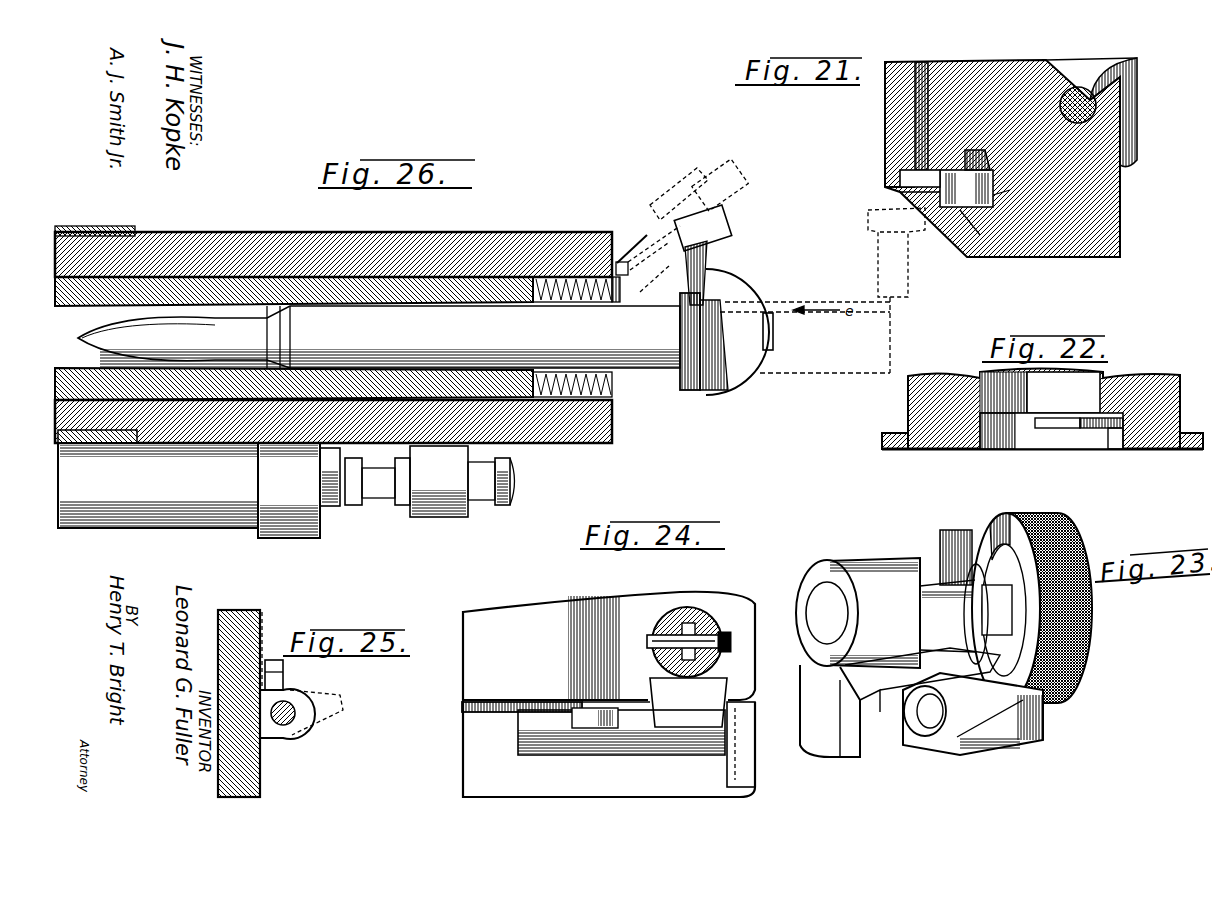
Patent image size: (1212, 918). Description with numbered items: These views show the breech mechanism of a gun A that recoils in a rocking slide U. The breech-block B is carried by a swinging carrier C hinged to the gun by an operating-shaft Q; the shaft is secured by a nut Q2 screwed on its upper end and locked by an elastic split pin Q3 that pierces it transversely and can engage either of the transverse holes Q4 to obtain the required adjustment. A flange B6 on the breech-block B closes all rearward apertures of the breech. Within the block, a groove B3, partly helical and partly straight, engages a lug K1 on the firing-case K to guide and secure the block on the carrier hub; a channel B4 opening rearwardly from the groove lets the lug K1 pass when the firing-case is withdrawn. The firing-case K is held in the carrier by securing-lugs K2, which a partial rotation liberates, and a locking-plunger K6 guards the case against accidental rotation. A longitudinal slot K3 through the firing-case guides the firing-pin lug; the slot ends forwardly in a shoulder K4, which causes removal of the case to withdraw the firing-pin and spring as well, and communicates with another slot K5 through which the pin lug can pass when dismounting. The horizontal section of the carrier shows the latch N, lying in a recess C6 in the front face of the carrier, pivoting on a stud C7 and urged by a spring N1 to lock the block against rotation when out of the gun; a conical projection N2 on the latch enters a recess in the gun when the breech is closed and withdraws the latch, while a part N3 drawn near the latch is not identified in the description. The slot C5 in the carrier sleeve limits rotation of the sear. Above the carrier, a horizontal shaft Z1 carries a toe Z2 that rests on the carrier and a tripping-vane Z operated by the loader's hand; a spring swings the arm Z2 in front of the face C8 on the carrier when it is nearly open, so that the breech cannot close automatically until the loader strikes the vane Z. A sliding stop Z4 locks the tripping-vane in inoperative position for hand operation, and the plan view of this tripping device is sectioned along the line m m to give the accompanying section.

In FIG. 26, the gun A is at (305, 232).
In FIG. 21, the gun A is at (1046, 60).
In FIG. 24, the gun A is at (518, 608).
In FIG. 25, the gun A is at (227, 610).
In FIG. 26, the rocking slide U is at (97, 226).
In FIG. 26, the breech-block B is at (712, 394).
In FIG. 21, the breech-block B is at (885, 108).
In FIG. 22, the groove B3 is at (1060, 428).
In FIG. 22, the channel B4 is at (1117, 438).
In FIG. 26, the flange B6 is at (746, 372).
In FIG. 21, the carrier C is at (1100, 250).
In FIG. 24, the carrier C is at (609, 737).
In FIG. 21, the slot C5 is at (1098, 100).
In FIG. 21, the recess C6 is at (938, 196).
In FIG. 21, the stud C7 is at (972, 230).
In FIG. 26, the face C8 is at (616, 276).
In FIG. 21, the operating-shaft Q is at (1090, 110).
In FIG. 24, the operating-shaft Q is at (697, 622).
In FIG. 24, the nut Q2 is at (715, 618).
In FIG. 24, the elastic split pin Q3 is at (731, 648).
In FIG. 24, the transverse holes Q4 is at (682, 616).
In FIG. 21, the latch N is at (952, 208).
In FIG. 21, the spring N1 is at (1010, 190).
In FIG. 21, the conical projection N2 is at (940, 168).
In FIG. 21, the stop tip N3 is at (988, 160).
In FIG. 23, the firing-case K is at (875, 563).
In FIG. 22, the lug K1 is at (1095, 430).
In FIG. 23, the lug K1 is at (832, 752).
In FIG. 23, the securing-lugs K2 is at (988, 528).
In FIG. 23, the longitudinal slot K3 is at (925, 725).
In FIG. 23, the shoulder K4 is at (872, 678).
In FIG. 23, the slot K5 is at (872, 700).
In FIG. 23, the locking-plunger K6 is at (925, 728).
In FIG. 26, the tripping-vane Z is at (631, 248).
In FIG. 24, the tripping-vane Z is at (478, 708).
In FIG. 25, the horizontal shaft Z1 is at (290, 718).
In FIG. 26, the toe Z2 is at (654, 259).
In FIG. 24, the toe Z2 is at (752, 778).
In FIG. 24, the sliding stop Z4 is at (590, 722).
In FIG. 25, the sliding stop Z4 is at (283, 668).
In FIG. 24, the section line m is at (582, 760).